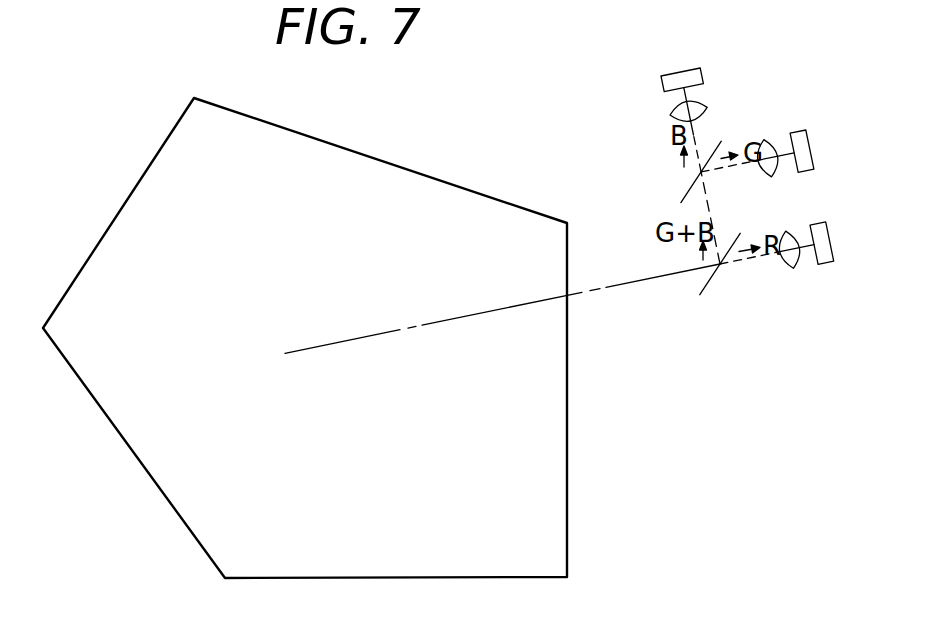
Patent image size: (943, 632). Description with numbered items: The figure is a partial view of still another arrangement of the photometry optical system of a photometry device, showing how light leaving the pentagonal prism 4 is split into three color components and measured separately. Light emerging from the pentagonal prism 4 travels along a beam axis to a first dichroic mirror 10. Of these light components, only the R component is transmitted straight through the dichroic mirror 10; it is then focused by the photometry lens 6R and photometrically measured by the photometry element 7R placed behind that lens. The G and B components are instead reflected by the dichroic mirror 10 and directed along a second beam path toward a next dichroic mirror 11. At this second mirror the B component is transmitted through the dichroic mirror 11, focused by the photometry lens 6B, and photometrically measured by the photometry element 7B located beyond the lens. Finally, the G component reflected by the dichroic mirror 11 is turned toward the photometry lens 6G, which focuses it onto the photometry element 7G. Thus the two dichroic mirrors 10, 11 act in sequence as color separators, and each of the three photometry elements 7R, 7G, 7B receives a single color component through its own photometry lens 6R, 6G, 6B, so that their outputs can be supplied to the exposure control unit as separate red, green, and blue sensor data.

The pentagonal prism 4 is at (340, 160).
The photometry element 7B is at (661, 85).
The photometry lens 6B is at (670, 114).
The dichroic mirror 11 is at (710, 144).
The photometry lens 6G is at (767, 170).
The photometry element 7G is at (807, 167).
The dichroic mirror 10 is at (710, 285).
The photometry lens 6R is at (787, 265).
The photometry element 7R is at (823, 263).